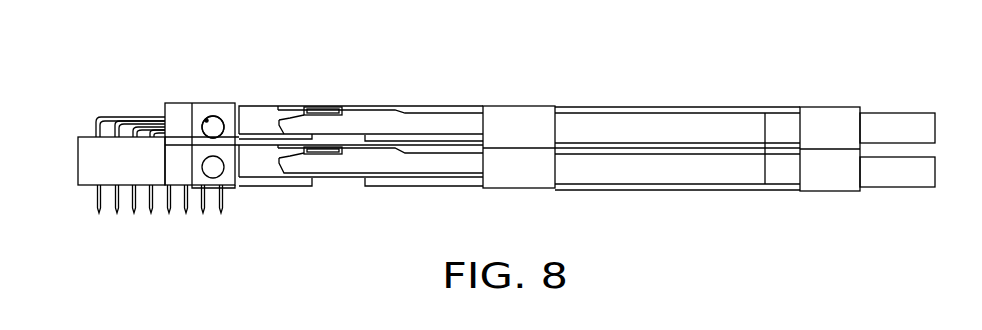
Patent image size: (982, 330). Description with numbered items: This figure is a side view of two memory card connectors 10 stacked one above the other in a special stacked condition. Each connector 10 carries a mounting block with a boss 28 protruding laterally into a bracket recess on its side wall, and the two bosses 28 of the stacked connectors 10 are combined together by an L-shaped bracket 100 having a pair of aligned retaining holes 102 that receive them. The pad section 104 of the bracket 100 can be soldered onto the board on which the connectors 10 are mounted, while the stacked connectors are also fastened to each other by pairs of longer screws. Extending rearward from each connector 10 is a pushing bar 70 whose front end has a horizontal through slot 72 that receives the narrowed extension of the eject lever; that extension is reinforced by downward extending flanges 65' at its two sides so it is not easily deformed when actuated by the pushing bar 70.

The memory card connector 10 is at (826, 97).
The boss 28 is at (223, 123).
The downward extending flange 65' is at (321, 144).
The pushing bar 70 is at (583, 117).
The horizontal through slot 72 is at (350, 112).
The L-shaped bracket 100 is at (225, 108).
The retaining hole 102 is at (206, 120).
The pad section 104 is at (230, 188).